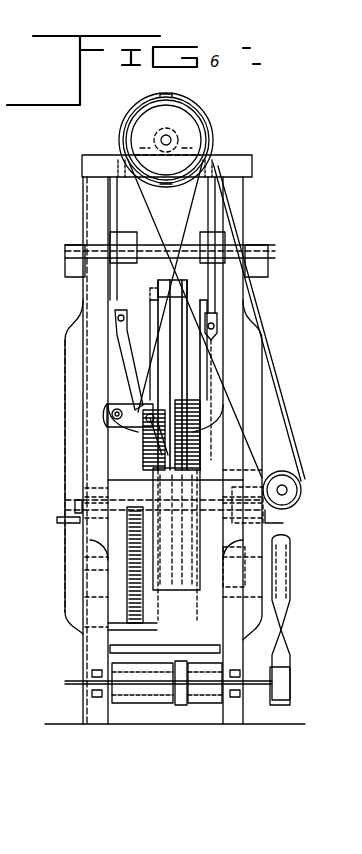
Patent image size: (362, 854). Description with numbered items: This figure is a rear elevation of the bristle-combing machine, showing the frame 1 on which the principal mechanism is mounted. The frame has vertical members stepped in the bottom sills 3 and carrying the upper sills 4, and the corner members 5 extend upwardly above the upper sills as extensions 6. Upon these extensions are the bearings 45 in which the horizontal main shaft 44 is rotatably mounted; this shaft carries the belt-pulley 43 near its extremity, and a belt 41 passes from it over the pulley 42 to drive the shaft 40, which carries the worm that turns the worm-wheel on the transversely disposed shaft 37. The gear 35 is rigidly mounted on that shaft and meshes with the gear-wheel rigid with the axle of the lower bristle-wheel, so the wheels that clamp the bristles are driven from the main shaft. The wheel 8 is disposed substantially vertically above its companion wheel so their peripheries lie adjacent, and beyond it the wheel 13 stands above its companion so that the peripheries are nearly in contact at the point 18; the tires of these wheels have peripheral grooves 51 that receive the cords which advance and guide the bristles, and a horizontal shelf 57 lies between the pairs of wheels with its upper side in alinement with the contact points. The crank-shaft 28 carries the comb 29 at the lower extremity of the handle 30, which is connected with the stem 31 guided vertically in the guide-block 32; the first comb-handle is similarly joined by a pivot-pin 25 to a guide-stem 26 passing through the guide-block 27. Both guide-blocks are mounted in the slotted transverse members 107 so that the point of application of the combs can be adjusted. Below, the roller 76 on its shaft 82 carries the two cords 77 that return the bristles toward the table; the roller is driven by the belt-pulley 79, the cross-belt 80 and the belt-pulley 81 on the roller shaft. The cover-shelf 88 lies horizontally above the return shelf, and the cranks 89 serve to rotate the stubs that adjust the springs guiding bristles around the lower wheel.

The frame 1 is at (262, 347).
The bottom sills 3 is at (236, 718).
The upper sills 4 is at (265, 268).
The corner members 5 is at (93, 303).
The extensions 6 is at (90, 165).
The wheel 8 is at (187, 298).
The wheel 13 is at (158, 288).
The point of contact 18 is at (160, 460).
The pivot-pin 25 is at (218, 325).
The guide-stem 26 is at (213, 200).
The guide-block 27 is at (217, 242).
The crank-shaft 28 is at (107, 422).
The comb 29 is at (160, 450).
The handle 30 is at (122, 348).
The stem 31 is at (122, 200).
The guide-block 32 is at (110, 240).
The gear 35 is at (130, 605).
The shaft 37 is at (268, 566).
The shaft 40 is at (286, 487).
The belt 41 is at (275, 395).
The pulley 42 is at (295, 494).
The belt-pulley 43 is at (185, 125).
The main shaft 44 is at (160, 140).
The bearings 45 is at (185, 150).
The peripheral grooves 51 is at (165, 300).
The horizontal shelf 57 is at (153, 475).
The roller 76 is at (138, 704).
The cords 77 is at (185, 704).
The belt-pulley 79 is at (291, 590).
The cross-belt 80 is at (283, 651).
The belt-pulley 81 is at (291, 690).
The shaft 82 is at (257, 690).
The cover-shelf 88 is at (163, 495).
The cranks 89 is at (62, 523).
The transverse members 107 is at (268, 250).